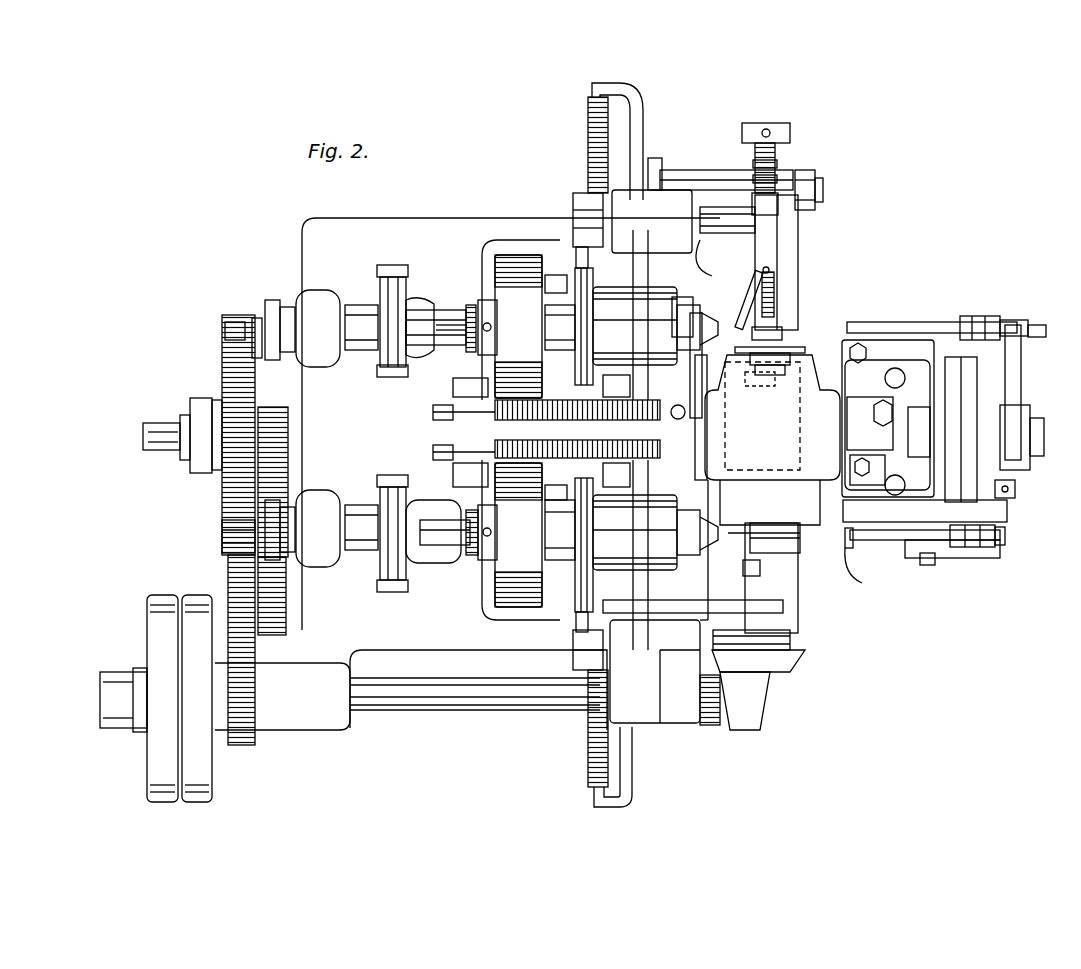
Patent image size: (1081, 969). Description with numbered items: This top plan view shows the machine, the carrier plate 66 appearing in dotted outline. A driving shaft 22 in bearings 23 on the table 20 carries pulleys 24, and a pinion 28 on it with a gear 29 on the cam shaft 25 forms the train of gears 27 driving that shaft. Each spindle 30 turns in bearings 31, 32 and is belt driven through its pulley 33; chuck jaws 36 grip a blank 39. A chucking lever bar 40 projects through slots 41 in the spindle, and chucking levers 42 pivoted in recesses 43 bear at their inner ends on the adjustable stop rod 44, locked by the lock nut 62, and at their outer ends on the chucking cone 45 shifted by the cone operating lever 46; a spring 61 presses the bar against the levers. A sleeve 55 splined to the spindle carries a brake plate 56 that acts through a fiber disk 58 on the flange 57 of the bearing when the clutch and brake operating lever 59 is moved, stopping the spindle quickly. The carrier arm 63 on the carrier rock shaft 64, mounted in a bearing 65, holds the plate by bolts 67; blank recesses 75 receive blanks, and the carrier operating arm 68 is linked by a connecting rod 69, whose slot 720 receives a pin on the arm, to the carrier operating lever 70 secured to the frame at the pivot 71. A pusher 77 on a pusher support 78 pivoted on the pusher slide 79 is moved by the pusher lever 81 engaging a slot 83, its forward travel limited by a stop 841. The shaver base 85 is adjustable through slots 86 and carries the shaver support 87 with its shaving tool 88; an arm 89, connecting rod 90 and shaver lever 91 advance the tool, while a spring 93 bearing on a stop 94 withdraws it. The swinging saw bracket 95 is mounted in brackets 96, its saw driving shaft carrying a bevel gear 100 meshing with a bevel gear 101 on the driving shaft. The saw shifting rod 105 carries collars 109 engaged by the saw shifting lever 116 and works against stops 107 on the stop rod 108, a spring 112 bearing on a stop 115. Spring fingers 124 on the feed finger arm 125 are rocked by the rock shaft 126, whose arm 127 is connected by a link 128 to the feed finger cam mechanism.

The table 20 is at (455, 232).
The driving shaft 22 is at (493, 700).
The bearings 23 is at (335, 718).
The pulleys 24 is at (195, 594).
The cam shaft 25 is at (158, 452).
The train of gears 27 is at (222, 529).
The pinion 28 is at (245, 742).
The gear 29 is at (220, 363).
The spindle 30 is at (358, 318).
The bearing 31 is at (305, 300).
The bearing 32 is at (612, 292).
The pulley 33 is at (532, 258).
The chuck jaws 36 is at (745, 360).
The blank 39 is at (750, 548).
The chucking lever bar 40 is at (470, 342).
The slots 41 is at (420, 320).
The chucking levers 42 is at (425, 340).
The recesses 43 is at (460, 560).
The adjustable stop rod 44 is at (228, 322).
The chucking cone 45 is at (395, 300).
The cone operating lever 46 is at (382, 268).
The sleeve 55 is at (575, 325).
The brake plate 56 is at (590, 280).
The flange 57 is at (608, 257).
The disk 58 is at (605, 532).
The clutch and brake operating lever 59 is at (548, 287).
The spring 61 is at (470, 310).
The lock nut 62 is at (253, 320).
The carrier arm 63 is at (870, 425).
The carrier rock shaft 64 is at (900, 415).
The bearing 65 is at (930, 432).
The carrier plate 66 is at (800, 400).
The bolts 67 is at (860, 462).
The carrier operating arm 68 is at (1020, 455).
The connecting rod 69 is at (1012, 492).
The carrier operating lever 70 is at (1010, 380).
The pivot 71 is at (1040, 335).
The blank recesses 75 is at (805, 530).
The pusher 77 is at (848, 548).
The pusher support 78 is at (960, 556).
The pusher slide 79 is at (920, 333).
The pusher lever 81 is at (985, 556).
The slot 83 is at (985, 322).
The shaver base 85 is at (705, 415).
The slots 86 is at (690, 247).
The shaver support 87 is at (660, 300).
The shaving tool 88 is at (740, 297).
The arm 89 is at (710, 445).
The connecting rod 90 is at (433, 417).
The shaver lever 91 is at (455, 388).
The spring 93 is at (565, 408).
The stop 94 is at (568, 412).
The swinging saw bracket 95 is at (810, 490).
The brackets 96 is at (800, 300).
The bevel gear 100 is at (800, 665).
The bevel gear 101 is at (750, 715).
The saw shifting rod 105 is at (767, 120).
The stops 107 is at (778, 160).
The stop rod 108 is at (745, 190).
The collars 109 is at (778, 200).
The spring 112 is at (778, 178).
The stop 115 is at (790, 130).
The saw shifting lever 116 is at (823, 188).
The spring fingers 124 is at (785, 330).
The feed finger arm 125 is at (775, 275).
The rock shaft 126 is at (727, 217).
The arm 127 is at (575, 197).
The link 128 is at (583, 262).
The slot 720 is at (956, 512).
The stop 841 is at (862, 583).